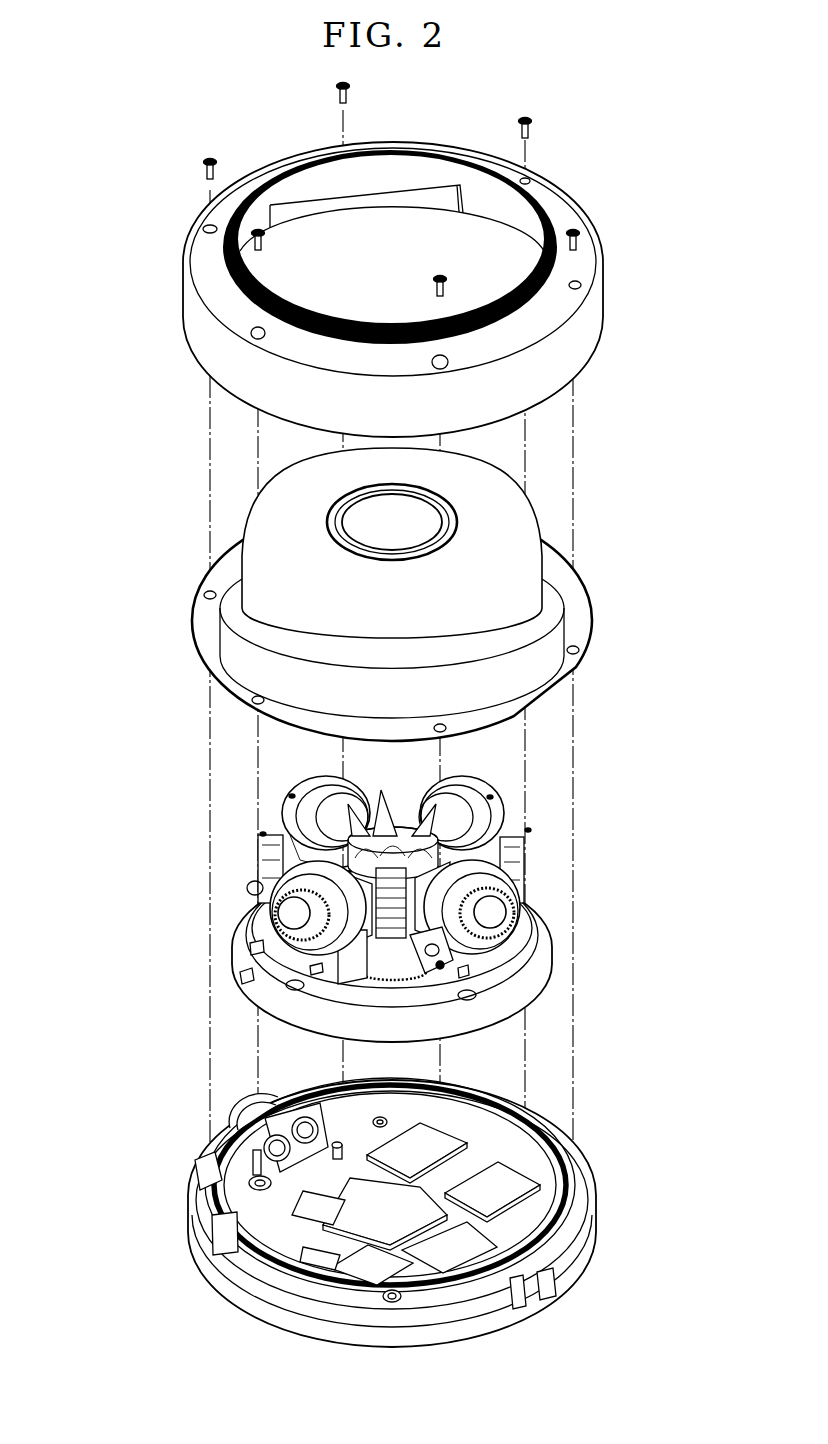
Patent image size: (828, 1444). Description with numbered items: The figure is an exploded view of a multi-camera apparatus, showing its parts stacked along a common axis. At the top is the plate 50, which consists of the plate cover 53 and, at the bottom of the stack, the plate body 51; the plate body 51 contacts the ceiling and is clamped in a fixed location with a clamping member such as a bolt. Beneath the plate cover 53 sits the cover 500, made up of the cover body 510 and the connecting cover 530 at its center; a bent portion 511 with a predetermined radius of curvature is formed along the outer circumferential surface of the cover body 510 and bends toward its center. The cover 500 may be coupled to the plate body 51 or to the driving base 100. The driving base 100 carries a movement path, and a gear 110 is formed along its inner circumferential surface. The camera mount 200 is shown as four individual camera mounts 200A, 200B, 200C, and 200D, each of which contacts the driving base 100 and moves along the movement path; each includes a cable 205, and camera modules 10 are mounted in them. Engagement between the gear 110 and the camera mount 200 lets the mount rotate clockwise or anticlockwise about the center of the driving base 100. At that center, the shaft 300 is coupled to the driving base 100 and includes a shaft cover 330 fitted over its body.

The plate 50 is at (345, 715).
The plate cover 53 is at (205, 360).
The plate body 51 is at (344, 1212).
The cover 500 is at (422, 588).
The cover body 510 is at (545, 580).
The bent portion 511 is at (304, 495).
The connecting cover 530 is at (430, 512).
The camera modules 10 is at (262, 830).
The driving base 100 is at (420, 906).
The camera mount 200 is at (420, 906).
The camera mount 200A is at (257, 838).
The camera mount 200B is at (524, 835).
The camera mount 200C is at (530, 937).
The camera mount 200D is at (330, 972).
The cable 205 is at (392, 802).
The shaft 300 is at (518, 924).
The shaft cover 330 is at (425, 886).
The gear 110 is at (425, 972).